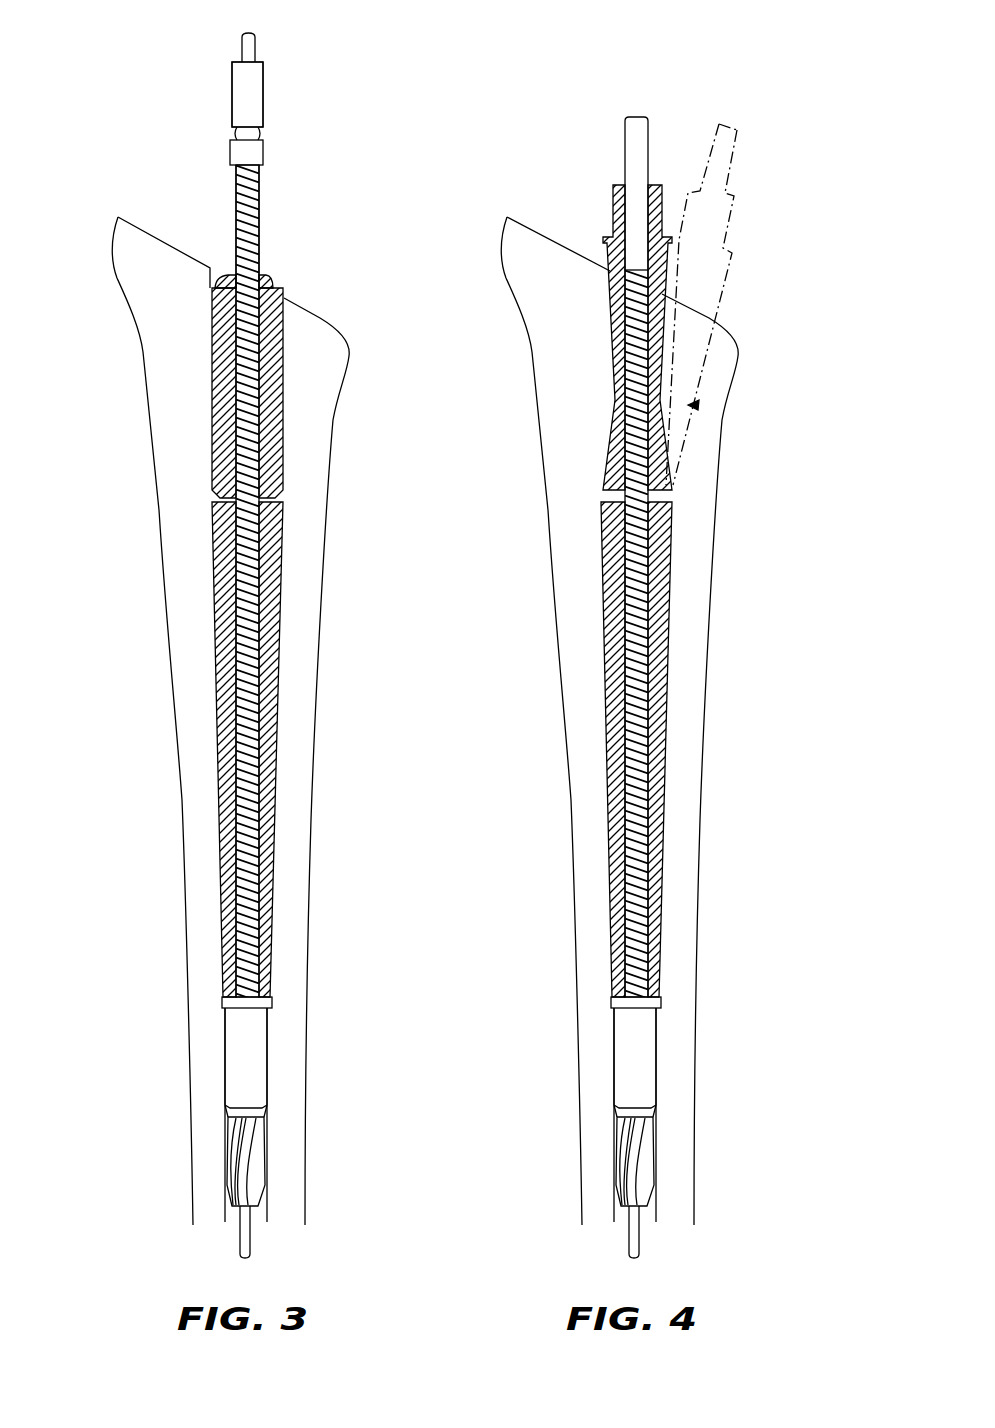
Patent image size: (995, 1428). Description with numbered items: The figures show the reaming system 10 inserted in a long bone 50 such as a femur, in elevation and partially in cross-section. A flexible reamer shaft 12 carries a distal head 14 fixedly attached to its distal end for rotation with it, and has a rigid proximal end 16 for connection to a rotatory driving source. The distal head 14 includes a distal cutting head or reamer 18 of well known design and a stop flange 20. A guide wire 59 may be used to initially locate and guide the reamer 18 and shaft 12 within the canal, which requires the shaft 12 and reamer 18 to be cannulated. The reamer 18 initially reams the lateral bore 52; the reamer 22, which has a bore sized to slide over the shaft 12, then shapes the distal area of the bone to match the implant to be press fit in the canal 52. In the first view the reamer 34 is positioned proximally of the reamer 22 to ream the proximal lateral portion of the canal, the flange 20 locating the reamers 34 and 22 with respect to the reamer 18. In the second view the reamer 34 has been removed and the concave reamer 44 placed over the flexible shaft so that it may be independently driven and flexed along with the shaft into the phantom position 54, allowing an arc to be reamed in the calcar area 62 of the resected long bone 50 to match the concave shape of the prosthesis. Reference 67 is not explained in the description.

In FIG. 3, the reaming system 10 is at (268, 225).
In FIG. 3, the flexible reamer shaft 12 is at (313, 581).
In FIG. 4, the flexible reamer shaft 12 is at (694, 633).
In FIG. 3, the distal head 14 is at (245, 1063).
In FIG. 3, the rigid proximal end 16 is at (258, 100).
In FIG. 4, the rigid proximal end 16 is at (635, 145).
In FIG. 3, the distal cutting head or reamer 18 is at (267, 1148).
In FIG. 4, the distal cutting head or reamer 18 is at (653, 1152).
In FIG. 3, the stop flange 20 is at (263, 1000).
In FIG. 4, the stop flange 20 is at (653, 1003).
In FIG. 3, the reamer 22 is at (278, 525).
In FIG. 4, the reamer 22 is at (668, 565).
In FIG. 3, the reamer 34 is at (283, 413).
In FIG. 4, the reamer 44 is at (613, 200).
In FIG. 3, the long bone 50 is at (124, 250).
In FIG. 4, the long bone 50 is at (505, 252).
In FIG. 3, the lateral bore 52 is at (275, 663).
In FIG. 4, the lateral bore 52 is at (657, 827).
In FIG. 4, the phantom position of reamer 44 54 is at (728, 192).
In FIG. 3, the guide wire 59 is at (253, 47).
In FIG. 4, the calcar area 62 is at (690, 405).
In FIG. 3, the shoulder 67 is at (238, 55).